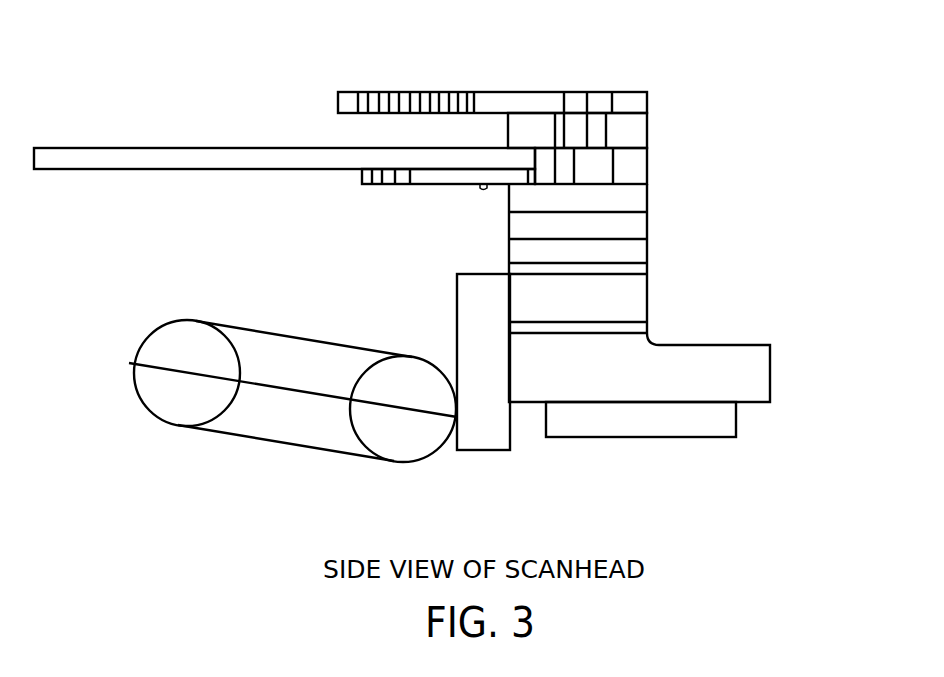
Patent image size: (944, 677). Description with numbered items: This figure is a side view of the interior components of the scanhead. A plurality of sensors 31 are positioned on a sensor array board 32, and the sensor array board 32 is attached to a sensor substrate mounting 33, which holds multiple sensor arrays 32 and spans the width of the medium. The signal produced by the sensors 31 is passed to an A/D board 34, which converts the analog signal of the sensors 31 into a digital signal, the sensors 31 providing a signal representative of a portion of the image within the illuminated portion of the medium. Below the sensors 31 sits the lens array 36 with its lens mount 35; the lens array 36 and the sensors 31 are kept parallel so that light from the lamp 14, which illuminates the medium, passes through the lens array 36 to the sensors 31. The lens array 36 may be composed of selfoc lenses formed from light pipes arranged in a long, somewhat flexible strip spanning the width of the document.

The lamp 14 is at (425, 463).
The sensors 31 is at (482, 190).
The sensor array board 32 is at (452, 167).
The sensor substrate mounting 33 is at (273, 147).
The A/D board 34 is at (476, 91).
The lens mount 35 is at (770, 368).
The lens array 36 is at (500, 453).